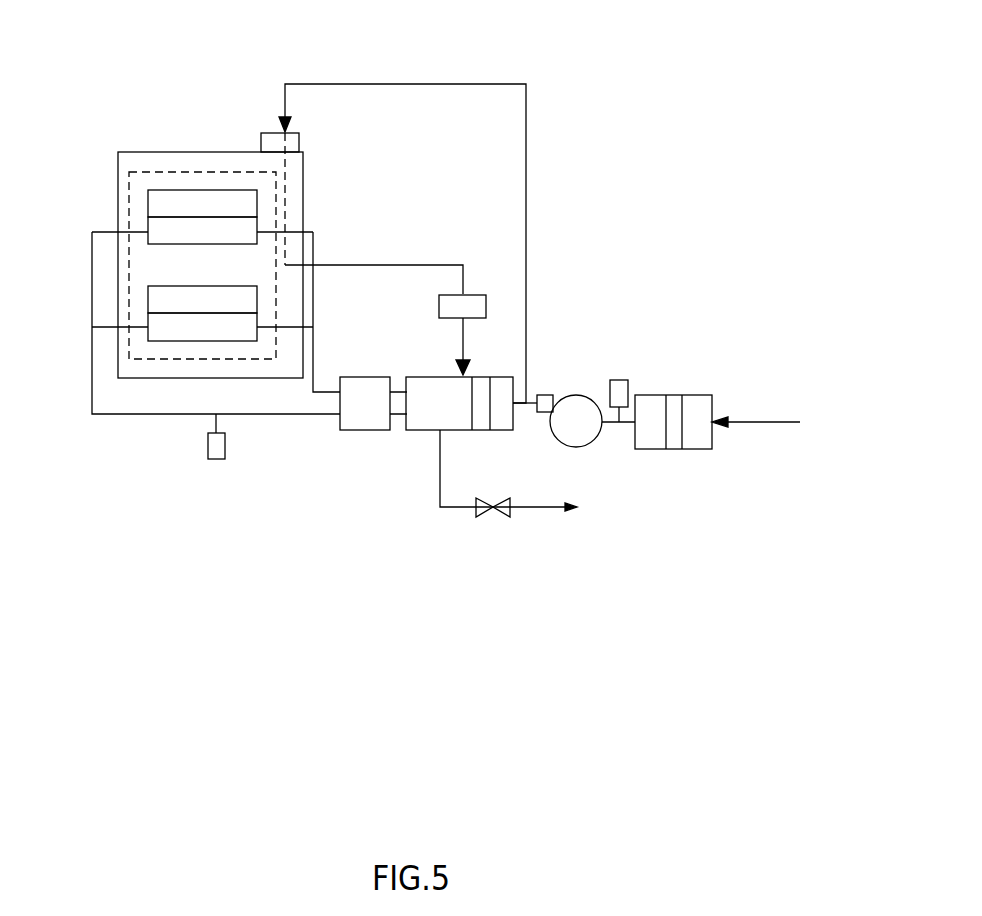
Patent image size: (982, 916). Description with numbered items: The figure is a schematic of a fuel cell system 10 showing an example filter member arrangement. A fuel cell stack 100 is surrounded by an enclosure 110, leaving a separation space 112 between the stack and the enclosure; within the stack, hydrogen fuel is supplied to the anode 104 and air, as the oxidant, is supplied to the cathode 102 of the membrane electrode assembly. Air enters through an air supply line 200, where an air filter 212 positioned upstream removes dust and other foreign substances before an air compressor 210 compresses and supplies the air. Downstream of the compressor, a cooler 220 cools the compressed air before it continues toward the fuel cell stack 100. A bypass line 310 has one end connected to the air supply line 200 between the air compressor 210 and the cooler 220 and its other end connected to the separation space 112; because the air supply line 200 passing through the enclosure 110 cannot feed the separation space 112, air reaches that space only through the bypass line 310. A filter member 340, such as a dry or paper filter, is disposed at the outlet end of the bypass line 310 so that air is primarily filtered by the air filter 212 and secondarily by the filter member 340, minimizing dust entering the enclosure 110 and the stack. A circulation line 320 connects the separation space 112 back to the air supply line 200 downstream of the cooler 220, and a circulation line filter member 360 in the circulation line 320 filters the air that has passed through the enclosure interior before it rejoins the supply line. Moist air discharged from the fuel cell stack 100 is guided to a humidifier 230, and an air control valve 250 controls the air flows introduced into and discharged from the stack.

The fuel cell system 10 is at (103, 22).
The fuel cell stack 100 is at (165, 172).
The cathode 102 is at (148, 225).
The anode 104 is at (148, 203).
The enclosure 110 is at (210, 152).
The separation space 112 is at (292, 190).
The air supply line 200 is at (528, 402).
The air compressor 210 is at (583, 395).
The air filter 212 is at (682, 395).
The cooler 220 is at (491, 413).
The humidifier 230 is at (418, 432).
The air control valve 250 is at (352, 432).
The bypass line 310 is at (526, 222).
The circulation line 320 is at (388, 264).
The filter member 340 is at (273, 133).
The circulation line filter member 360 is at (473, 294).